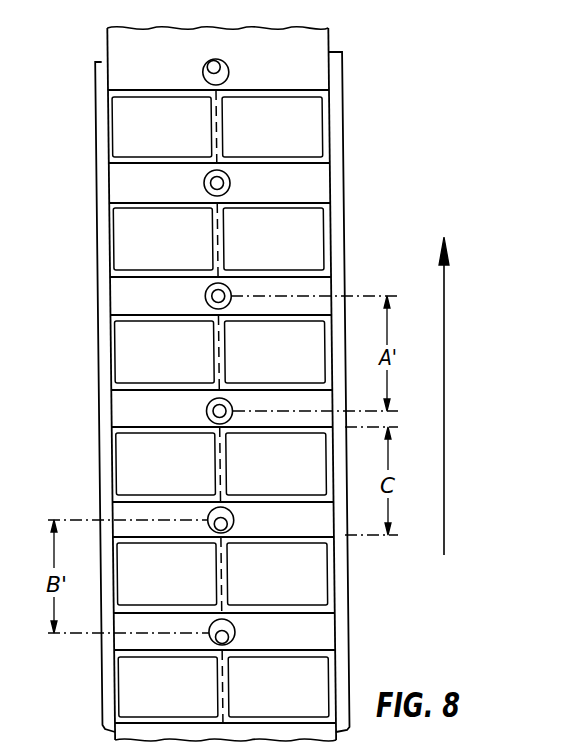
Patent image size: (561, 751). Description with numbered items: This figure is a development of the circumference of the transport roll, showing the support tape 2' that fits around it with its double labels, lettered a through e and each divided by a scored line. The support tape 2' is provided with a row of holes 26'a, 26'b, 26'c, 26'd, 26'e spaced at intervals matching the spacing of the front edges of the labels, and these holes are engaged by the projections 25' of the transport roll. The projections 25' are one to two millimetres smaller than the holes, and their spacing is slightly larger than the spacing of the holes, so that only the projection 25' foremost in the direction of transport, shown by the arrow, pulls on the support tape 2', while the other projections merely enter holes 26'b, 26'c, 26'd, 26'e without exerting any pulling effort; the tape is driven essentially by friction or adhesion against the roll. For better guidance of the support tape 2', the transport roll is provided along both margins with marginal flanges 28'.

The support tape 2' is at (240, 378).
The projections 25' is at (242, 172).
The hole 26'a is at (185, 72).
The hole 26'b is at (185, 184).
The hole 26'c is at (180, 297).
The hole 26'd is at (185, 411).
The hole 26'e is at (254, 521).
The marginal flanges 28' is at (217, 392).